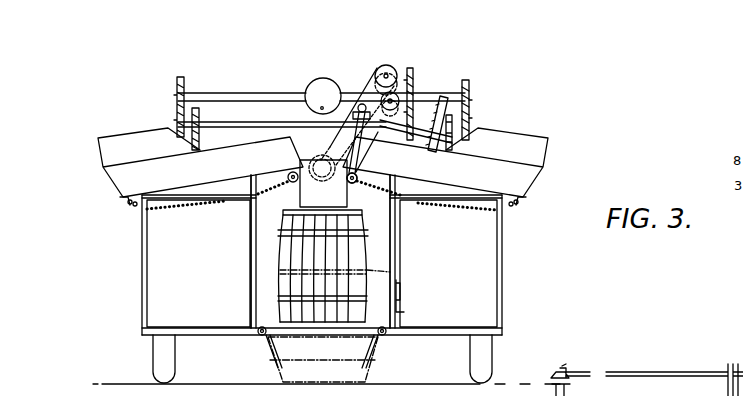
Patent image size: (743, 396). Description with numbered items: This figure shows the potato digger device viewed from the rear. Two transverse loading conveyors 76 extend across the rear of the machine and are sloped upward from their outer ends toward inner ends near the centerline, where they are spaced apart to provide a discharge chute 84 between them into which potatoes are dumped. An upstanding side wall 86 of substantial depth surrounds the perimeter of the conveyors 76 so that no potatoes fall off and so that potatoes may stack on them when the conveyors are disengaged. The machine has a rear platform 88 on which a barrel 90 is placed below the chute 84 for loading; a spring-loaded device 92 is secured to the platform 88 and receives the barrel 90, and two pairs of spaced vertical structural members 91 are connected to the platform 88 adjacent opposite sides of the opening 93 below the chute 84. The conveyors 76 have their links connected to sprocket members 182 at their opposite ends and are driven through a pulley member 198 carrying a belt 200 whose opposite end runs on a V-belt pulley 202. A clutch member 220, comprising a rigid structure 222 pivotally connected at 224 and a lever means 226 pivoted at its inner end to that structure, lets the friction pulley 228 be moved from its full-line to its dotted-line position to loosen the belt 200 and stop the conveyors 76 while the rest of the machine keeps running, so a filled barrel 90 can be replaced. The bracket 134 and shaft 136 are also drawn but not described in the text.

The loading conveyors 76 is at (200, 207).
The discharge chute 84 is at (346, 199).
The side wall 86 is at (118, 188).
The rear platform 88 is at (439, 335).
The barrel 90 is at (280, 245).
The vertical structural members 91 is at (253, 275).
The spring-loaded device 92 is at (272, 345).
The opening 93 is at (378, 271).
The support bracket 134 is at (566, 368).
The shaft 136 is at (705, 372).
The sprocket members 182 is at (291, 171).
The pulley member 198 is at (377, 64).
The belt 200 is at (378, 82).
The V-belt pulley 202 is at (323, 183).
The clutch member 220 is at (306, 108).
The rigid structure 222 is at (292, 130).
The pivotal connection 224 is at (360, 135).
The lever means 226 is at (424, 96).
The friction pulley 228 is at (414, 78).